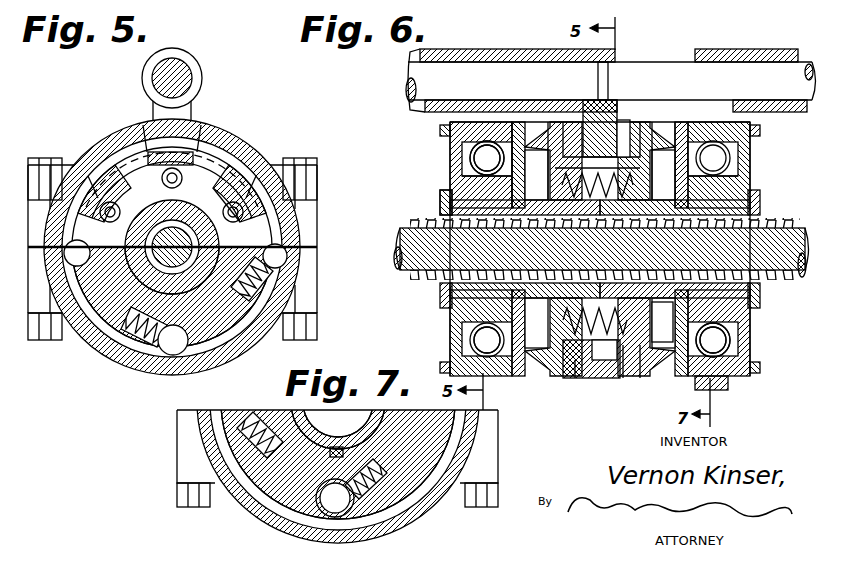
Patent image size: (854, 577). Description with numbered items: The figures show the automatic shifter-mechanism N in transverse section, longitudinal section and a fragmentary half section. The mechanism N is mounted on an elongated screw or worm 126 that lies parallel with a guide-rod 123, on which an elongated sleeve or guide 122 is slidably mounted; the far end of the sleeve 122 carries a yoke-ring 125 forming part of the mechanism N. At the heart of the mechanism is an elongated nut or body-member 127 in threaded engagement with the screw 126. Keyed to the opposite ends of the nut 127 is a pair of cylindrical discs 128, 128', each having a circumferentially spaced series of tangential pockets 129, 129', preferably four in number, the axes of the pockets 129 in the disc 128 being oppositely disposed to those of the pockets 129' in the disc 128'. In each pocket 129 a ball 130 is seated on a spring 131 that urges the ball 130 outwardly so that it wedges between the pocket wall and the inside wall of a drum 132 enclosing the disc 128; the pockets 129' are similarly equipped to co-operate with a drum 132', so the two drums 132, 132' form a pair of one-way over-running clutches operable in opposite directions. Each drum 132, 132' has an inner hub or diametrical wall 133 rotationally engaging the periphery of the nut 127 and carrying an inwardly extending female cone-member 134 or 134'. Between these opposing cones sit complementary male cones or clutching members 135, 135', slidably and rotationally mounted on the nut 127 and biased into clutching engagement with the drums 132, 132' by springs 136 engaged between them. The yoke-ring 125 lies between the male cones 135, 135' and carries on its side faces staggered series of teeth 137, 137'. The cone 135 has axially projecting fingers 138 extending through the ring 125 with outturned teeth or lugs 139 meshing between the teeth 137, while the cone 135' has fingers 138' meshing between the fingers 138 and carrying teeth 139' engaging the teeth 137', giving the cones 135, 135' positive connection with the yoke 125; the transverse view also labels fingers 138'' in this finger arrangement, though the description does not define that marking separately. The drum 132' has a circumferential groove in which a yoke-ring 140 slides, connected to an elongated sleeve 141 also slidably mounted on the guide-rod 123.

In FIG. 5, the elongated sleeve or guide 122 is at (143, 86).
In FIG. 6, the elongated sleeve or guide 122 is at (508, 48).
In FIG. 5, the guide-rod 123 is at (153, 72).
In FIG. 6, the guide-rod 123 is at (410, 90).
In FIG. 5, the yoke-ring 125 is at (147, 128).
In FIG. 6, the yoke-ring 125 is at (604, 112).
In FIG. 5, the screw or worm 126 is at (203, 242).
In FIG. 6, the screw or worm 126 is at (601, 249).
In FIG. 7, the screw or worm 126 is at (317, 404).
In FIG. 5, the nut or body-member 127 is at (214, 223).
In FIG. 6, the nut or body-member 127 is at (466, 207).
In FIG. 5, the cylindrical disc 128 is at (155, 265).
In FIG. 6, the cylindrical disc 128 is at (449, 181).
In FIG. 6, the cylindrical disc 128' is at (739, 179).
In FIG. 7, the cylindrical disc 128' is at (315, 410).
In FIG. 5, the tangential pocket 129 is at (209, 273).
In FIG. 6, the tangential pocket 129 is at (491, 329).
In FIG. 6, the tangential pocket 129' is at (707, 261).
In FIG. 7, the tangential pocket 129' is at (335, 413).
In FIG. 5, the ball 130 is at (167, 343).
In FIG. 6, the ball 130 is at (712, 331).
In FIG. 7, the ball 130 is at (390, 522).
In FIG. 5, the spring 131 is at (133, 343).
In FIG. 6, the spring 131 is at (717, 347).
In FIG. 7, the spring 131 is at (345, 507).
In FIG. 5, the drum 132 is at (195, 247).
In FIG. 6, the drum 132 is at (520, 145).
In FIG. 6, the drum 132' is at (680, 140).
In FIG. 7, the drum 132' is at (311, 402).
In FIG. 6, the inner hub or diametrical wall 133 is at (688, 152).
In FIG. 6, the female cone-member 134 is at (559, 137).
In FIG. 6, the female cone-member 134' is at (666, 142).
In FIG. 6, the male cone or clutching member 135 is at (576, 287).
In FIG. 6, the male cone or clutching member 135' is at (622, 358).
In FIG. 5, the tensional member or spring 136 is at (225, 185).
In FIG. 6, the tensional member or spring 136 is at (613, 140).
In FIG. 5, the teeth 137 is at (148, 122).
In FIG. 6, the teeth 137 is at (651, 384).
In FIG. 6, the teeth 137' is at (565, 382).
In FIG. 6, the axially projecting fingers 138 is at (591, 373).
In FIG. 6, the fingers 138' is at (660, 322).
In FIG. 5, the lug 138'' is at (144, 145).
In FIG. 5, the outturned teeth or lugs 139 is at (176, 164).
In FIG. 6, the outturned teeth or lugs 139 is at (617, 384).
In FIG. 6, the teeth 139' is at (567, 392).
In FIG. 6, the yoke-ring 140 is at (713, 390).
In FIG. 6, the guide or elongated sleeve 141 is at (745, 50).
In FIG. 6, the automatic shifter-mechanism N is at (430, 138).